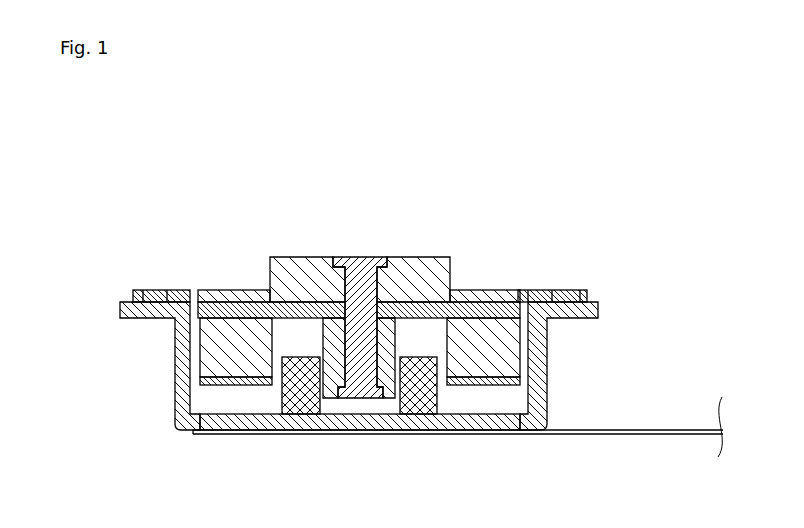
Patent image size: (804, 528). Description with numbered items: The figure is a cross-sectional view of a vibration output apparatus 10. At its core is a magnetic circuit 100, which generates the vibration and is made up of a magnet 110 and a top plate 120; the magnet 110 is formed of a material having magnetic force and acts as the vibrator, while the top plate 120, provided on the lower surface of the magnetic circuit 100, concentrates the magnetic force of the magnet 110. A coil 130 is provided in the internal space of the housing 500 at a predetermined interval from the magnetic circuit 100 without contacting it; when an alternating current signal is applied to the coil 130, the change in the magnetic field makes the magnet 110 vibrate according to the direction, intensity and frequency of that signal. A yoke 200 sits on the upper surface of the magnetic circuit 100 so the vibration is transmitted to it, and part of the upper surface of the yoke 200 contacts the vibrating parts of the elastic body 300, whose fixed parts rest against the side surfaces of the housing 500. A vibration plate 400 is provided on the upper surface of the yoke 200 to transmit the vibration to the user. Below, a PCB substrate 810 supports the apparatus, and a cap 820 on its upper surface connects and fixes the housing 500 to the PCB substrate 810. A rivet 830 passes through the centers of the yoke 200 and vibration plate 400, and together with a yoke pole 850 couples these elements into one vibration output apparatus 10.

The vibration output apparatus 10 is at (296, 162).
The magnetic circuit 100 is at (361, 357).
The magnet 110 is at (215, 350).
The top plate 120 is at (197, 375).
The coil 130 is at (293, 414).
The yoke 200 is at (205, 300).
The elastic body 300 is at (233, 290).
The vibration plate 400 is at (422, 257).
The housing 500 is at (114, 301).
The PCB substrate 810 is at (653, 436).
The cap 820 is at (473, 417).
The rivet 830 is at (350, 257).
The yoke pole 850 is at (331, 398).